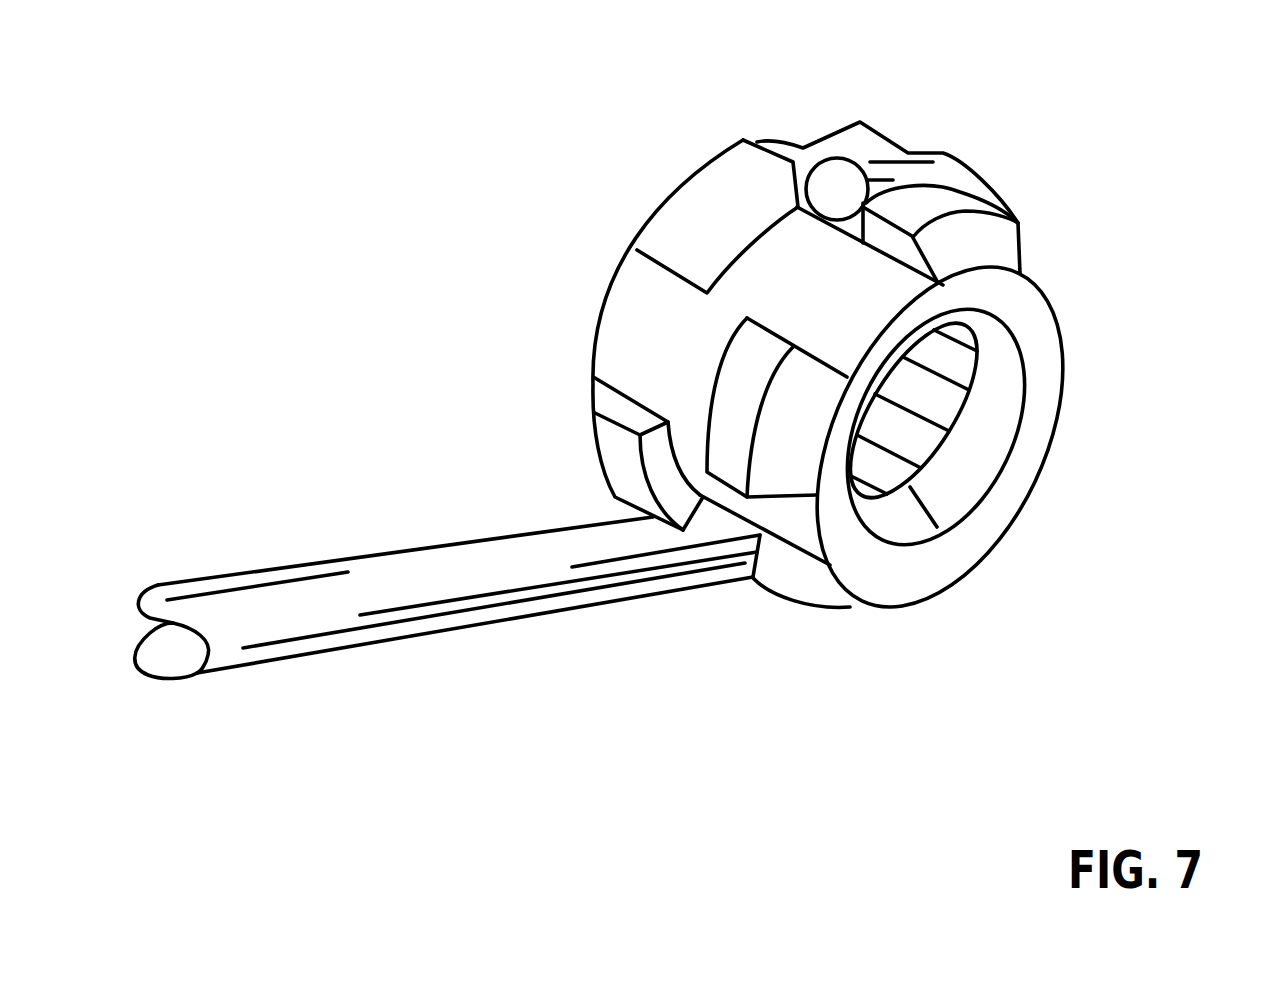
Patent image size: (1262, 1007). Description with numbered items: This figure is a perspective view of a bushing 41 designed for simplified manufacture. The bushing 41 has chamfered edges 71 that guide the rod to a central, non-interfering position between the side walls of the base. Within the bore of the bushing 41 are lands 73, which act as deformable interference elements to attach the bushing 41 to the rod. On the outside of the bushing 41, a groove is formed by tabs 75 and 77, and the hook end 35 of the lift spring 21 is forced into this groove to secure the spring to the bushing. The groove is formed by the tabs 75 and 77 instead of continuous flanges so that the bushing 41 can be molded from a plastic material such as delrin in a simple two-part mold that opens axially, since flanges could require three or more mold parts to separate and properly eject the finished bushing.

The lift spring 21 is at (250, 578).
The hook end 35 is at (990, 187).
The bushing 41 is at (1057, 320).
The chamfered edges 71 is at (850, 603).
The lands 73 is at (943, 402).
The tab 75 is at (687, 235).
The tab 77 is at (917, 208).